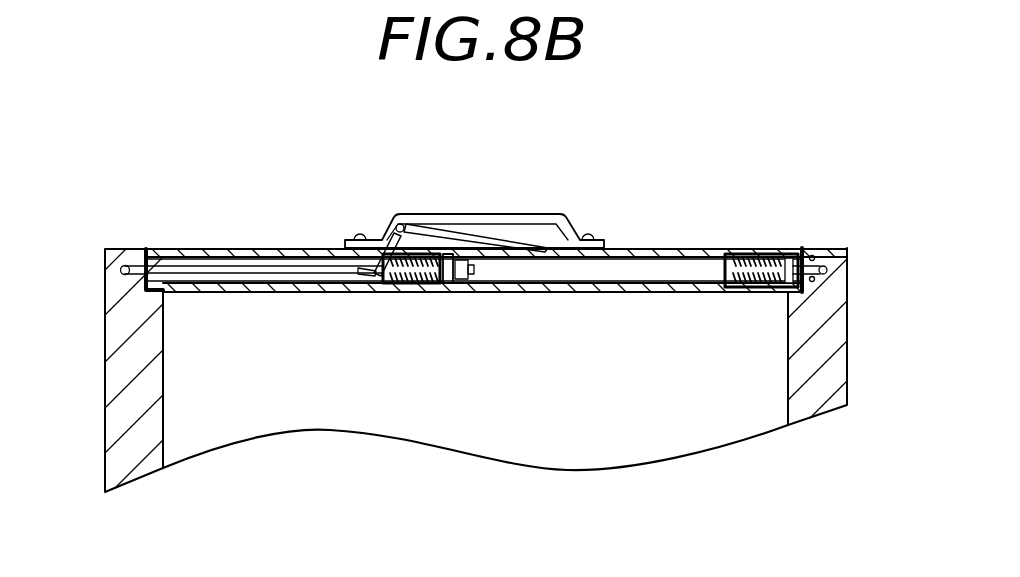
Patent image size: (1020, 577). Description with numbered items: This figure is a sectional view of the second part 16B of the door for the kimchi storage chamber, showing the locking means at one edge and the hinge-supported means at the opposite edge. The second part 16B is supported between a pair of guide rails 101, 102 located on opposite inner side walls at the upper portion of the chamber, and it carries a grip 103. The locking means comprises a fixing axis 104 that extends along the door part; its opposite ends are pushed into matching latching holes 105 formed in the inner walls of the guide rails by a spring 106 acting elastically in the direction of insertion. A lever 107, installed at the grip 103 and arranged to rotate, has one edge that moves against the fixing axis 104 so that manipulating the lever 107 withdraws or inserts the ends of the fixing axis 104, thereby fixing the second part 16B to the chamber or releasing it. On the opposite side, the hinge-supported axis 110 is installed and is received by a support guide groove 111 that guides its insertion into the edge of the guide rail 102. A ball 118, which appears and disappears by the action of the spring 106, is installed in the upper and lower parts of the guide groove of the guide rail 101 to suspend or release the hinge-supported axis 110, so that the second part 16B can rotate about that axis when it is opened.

The guide rail 101 is at (158, 284).
The guide rail 102 is at (806, 302).
The grip 103 is at (502, 214).
The fixing axis 104 is at (254, 270).
The latching holes 105 is at (133, 262).
The spring 106 is at (412, 285).
The lever 107 is at (432, 234).
The second part 16B is at (628, 249).
The hinge-supported axis 110 is at (745, 253).
The support guide groove 111 is at (830, 262).
The ball 118 is at (808, 251).